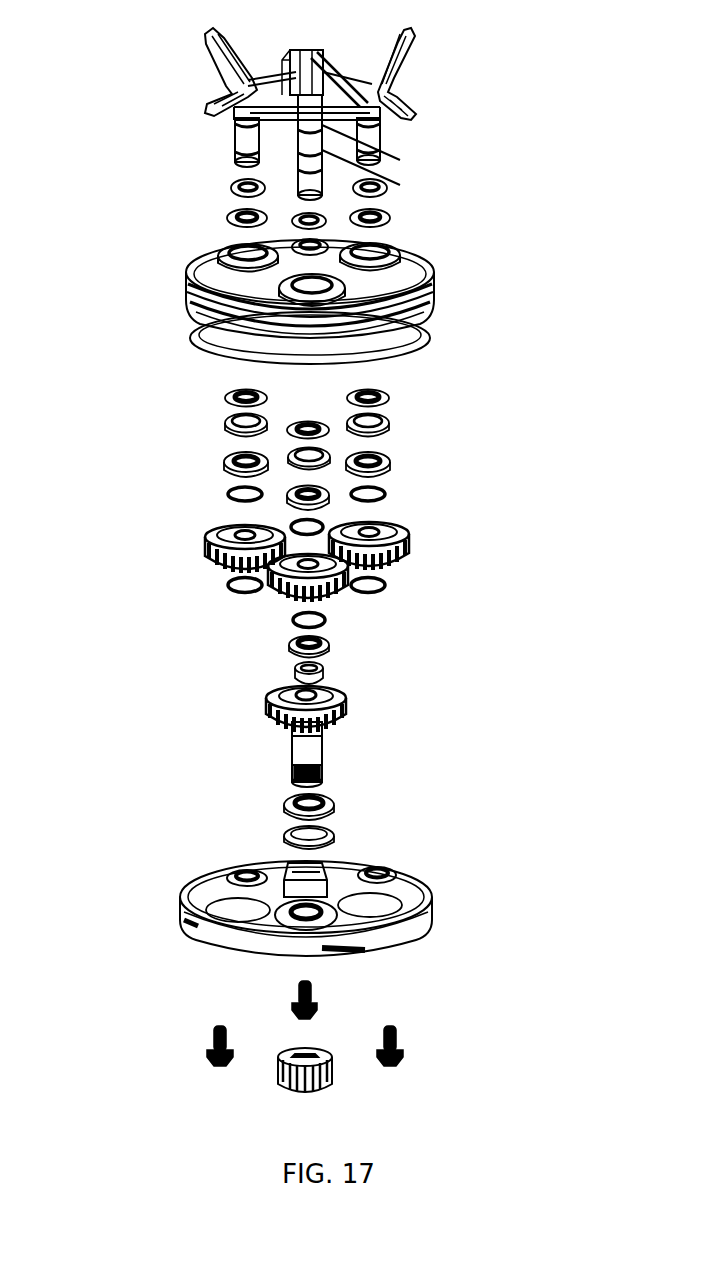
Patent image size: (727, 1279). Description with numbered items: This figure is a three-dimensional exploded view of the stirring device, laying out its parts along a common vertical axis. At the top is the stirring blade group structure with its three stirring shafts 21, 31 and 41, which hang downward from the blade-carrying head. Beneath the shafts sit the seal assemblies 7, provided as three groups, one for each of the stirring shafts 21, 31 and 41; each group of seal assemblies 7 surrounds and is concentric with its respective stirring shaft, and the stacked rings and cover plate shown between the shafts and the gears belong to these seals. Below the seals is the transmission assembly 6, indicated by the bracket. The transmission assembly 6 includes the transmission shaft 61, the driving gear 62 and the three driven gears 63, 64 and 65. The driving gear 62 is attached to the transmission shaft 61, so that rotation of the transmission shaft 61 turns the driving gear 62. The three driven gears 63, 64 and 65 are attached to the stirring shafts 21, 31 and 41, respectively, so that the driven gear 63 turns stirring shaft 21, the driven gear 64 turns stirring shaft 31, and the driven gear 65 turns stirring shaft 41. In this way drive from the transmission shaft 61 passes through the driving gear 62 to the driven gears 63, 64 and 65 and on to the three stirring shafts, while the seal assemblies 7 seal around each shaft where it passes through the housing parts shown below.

The stirring shaft 31 is at (236, 132).
The stirring shaft 21 is at (380, 136).
The stirring shaft 41 is at (320, 153).
The seal assemblies 7 is at (200, 444).
The transmission assembly 6 is at (384, 634).
The driven gear 63 is at (405, 523).
The driven gear 64 is at (285, 543).
The driven gear 65 is at (330, 592).
The driving gear 62 is at (345, 705).
The transmission shaft 61 is at (364, 761).